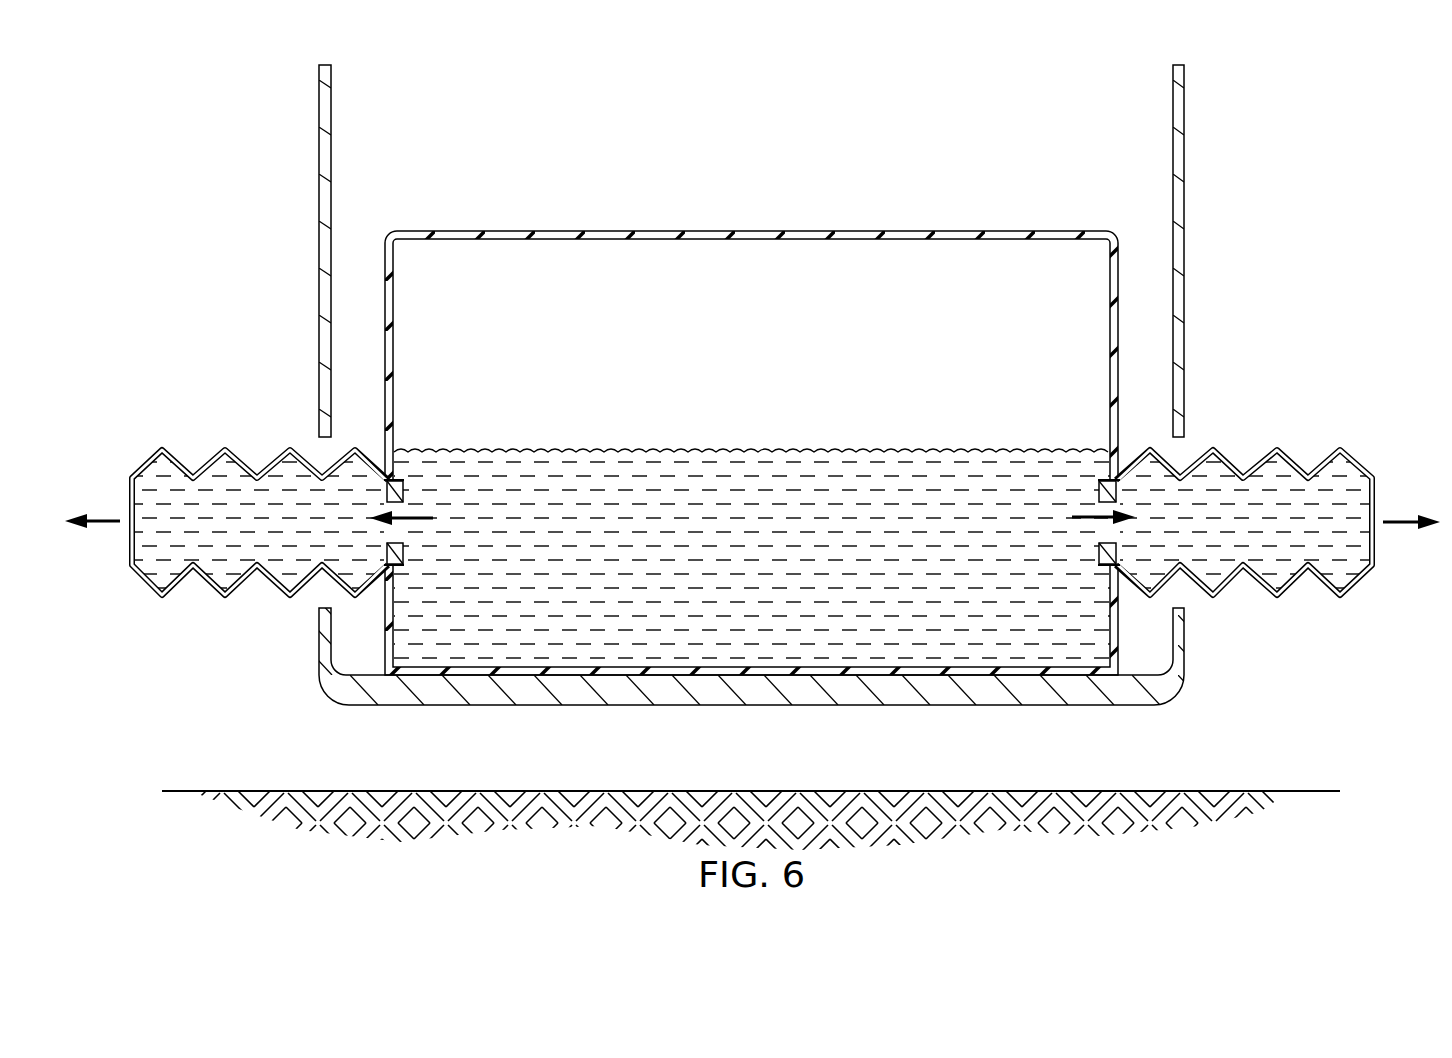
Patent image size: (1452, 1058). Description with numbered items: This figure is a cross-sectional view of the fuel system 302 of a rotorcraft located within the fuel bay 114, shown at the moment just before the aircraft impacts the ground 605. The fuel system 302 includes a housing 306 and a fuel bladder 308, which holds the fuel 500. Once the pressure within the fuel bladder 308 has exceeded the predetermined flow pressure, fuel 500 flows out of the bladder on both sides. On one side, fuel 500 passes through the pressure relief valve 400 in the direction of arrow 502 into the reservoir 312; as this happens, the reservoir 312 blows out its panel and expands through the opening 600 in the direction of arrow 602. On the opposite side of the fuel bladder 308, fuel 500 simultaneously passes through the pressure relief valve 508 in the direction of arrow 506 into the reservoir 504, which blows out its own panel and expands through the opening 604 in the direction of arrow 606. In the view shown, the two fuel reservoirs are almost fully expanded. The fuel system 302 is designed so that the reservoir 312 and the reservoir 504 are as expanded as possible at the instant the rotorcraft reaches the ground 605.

The fuel bay 114 is at (285, 239).
The fuel system 302 is at (751, 405).
The housing 306 is at (1184, 297).
The fuel bladder 308 is at (582, 241).
The reservoir 312 is at (1292, 590).
The pressure relief valve 400 is at (1098, 553).
The fuel 500 is at (781, 583).
The arrow 502 is at (1077, 511).
The reservoir 504 is at (217, 596).
The arrow 506 is at (426, 514).
The pressure relief valve 508 is at (404, 553).
The opening 600 is at (1192, 445).
The arrow 602 is at (1402, 526).
The opening 604 is at (311, 445).
The ground 605 is at (256, 790).
The arrow 606 is at (97, 524).